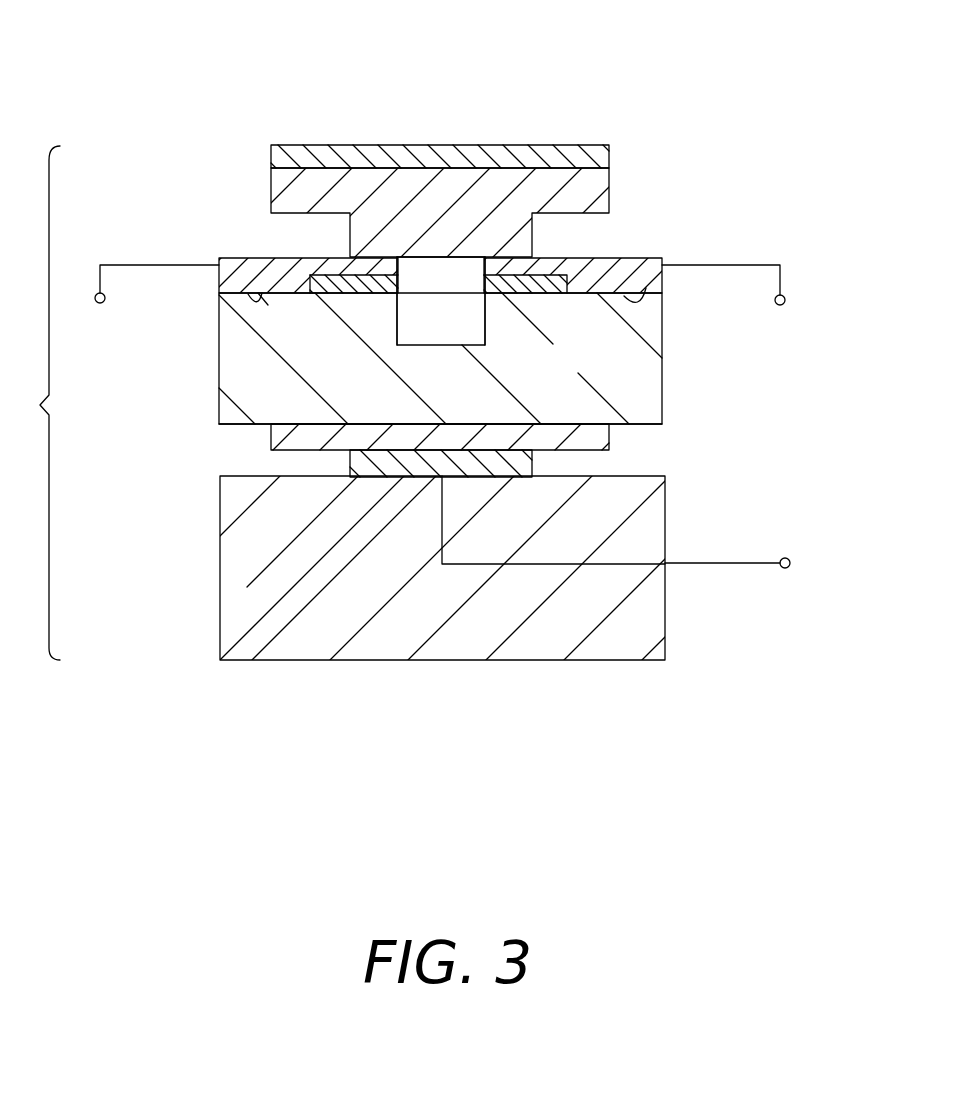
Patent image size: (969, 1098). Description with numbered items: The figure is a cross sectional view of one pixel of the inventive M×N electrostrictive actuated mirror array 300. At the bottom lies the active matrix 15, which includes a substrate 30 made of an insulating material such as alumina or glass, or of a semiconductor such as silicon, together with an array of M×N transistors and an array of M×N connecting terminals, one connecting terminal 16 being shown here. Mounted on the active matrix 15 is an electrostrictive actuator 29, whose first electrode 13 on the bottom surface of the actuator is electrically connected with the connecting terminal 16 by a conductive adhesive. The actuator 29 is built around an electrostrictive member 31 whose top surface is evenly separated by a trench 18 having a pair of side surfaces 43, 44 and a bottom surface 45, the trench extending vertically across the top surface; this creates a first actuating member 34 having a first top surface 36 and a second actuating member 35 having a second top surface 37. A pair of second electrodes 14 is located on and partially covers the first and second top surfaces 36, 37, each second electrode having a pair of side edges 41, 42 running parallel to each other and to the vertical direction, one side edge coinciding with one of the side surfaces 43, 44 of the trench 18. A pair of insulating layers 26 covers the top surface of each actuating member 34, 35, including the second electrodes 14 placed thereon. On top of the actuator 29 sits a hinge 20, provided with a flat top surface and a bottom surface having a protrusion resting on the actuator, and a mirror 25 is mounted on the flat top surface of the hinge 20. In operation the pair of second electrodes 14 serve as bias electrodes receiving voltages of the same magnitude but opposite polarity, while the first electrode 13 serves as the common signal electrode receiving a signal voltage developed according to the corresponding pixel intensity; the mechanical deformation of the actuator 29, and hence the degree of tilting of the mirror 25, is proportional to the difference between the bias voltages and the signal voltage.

The M×N electrostrictive actuated mirror array 300 is at (551, 114).
The electrostrictive actuator 29 is at (46, 215).
The mirror 25 is at (597, 155).
The hinge 20 is at (597, 183).
The insulating layer 26 is at (262, 293).
The first top surface 36 is at (258, 293).
The side edge 42 is at (328, 288).
The side edge 41 is at (390, 288).
The second top surface 37 is at (646, 288).
The second electrode 14 is at (675, 365).
The side surface 44 is at (485, 318).
The bottom surface 45 is at (433, 347).
The side surface 43 is at (399, 344).
The first actuating member 34 is at (302, 405).
The second actuating member 35 is at (598, 361).
The trench 18 is at (314, 296).
The electrostrictive member 31 is at (238, 420).
The first electrode 13 is at (600, 442).
The connecting terminal 16 is at (520, 464).
The substrate 30 is at (298, 642).
The active matrix 15 is at (467, 638).